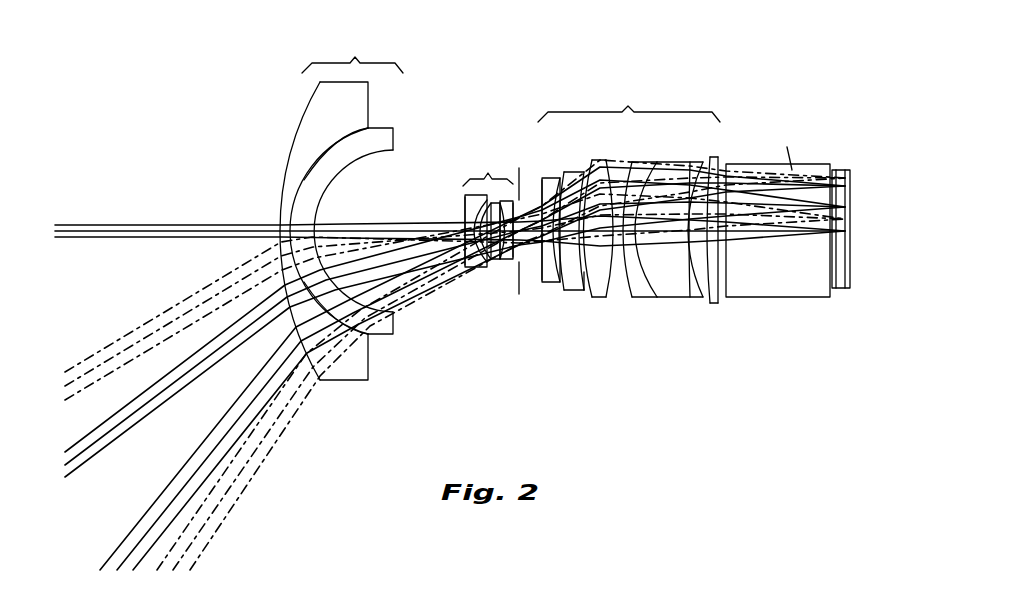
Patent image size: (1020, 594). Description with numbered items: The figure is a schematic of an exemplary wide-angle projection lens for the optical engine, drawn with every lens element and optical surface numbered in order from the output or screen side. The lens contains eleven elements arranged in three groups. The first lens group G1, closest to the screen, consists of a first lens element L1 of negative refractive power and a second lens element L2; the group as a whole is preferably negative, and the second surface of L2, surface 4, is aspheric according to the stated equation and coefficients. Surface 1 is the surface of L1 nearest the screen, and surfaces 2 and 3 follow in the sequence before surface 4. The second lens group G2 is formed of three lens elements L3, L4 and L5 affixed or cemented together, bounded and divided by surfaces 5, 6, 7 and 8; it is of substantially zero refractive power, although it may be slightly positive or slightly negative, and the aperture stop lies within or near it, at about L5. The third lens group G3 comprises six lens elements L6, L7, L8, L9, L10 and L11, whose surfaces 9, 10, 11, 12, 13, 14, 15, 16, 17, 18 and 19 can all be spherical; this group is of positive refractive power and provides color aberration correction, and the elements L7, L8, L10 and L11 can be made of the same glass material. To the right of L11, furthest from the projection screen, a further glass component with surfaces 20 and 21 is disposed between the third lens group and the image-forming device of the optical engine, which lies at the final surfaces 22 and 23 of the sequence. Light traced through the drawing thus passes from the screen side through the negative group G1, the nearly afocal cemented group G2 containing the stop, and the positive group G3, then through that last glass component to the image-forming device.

The first surface of first lens element 1 is at (295, 134).
The second surface of first lens element 2 is at (369, 128).
The first surface of second lens element 3 is at (302, 182).
The second surface of second lens element 4 is at (363, 163).
The optical surface 5 is at (466, 206).
The optical surface 6 is at (464, 217).
The optical surface 7 is at (520, 195).
The optical surface 8 is at (515, 259).
The optical surface 9 is at (545, 179).
The optical surface 10 is at (560, 178).
The optical surface 11 is at (572, 178).
The optical surface 12 is at (585, 176).
The optical surface 13 is at (583, 283).
The optical surface 14 is at (616, 163).
The optical surface 15 is at (625, 287).
The optical surface 16 is at (656, 163).
The optical surface 17 is at (690, 163).
The optical surface 18 is at (693, 288).
The optical surface 19 is at (718, 163).
The prism surface 20 is at (728, 272).
The prism surface 21 is at (836, 289).
The imager-side surface 22 is at (832, 270).
The imager surface 23 is at (832, 104).
The first lens group G1 is at (331, 237).
The second lens group G2 is at (472, 233).
The third lens group G3 is at (653, 233).
The first lens element L1 is at (342, 372).
The second lens element L2 is at (383, 327).
The third lens element L3 is at (475, 268).
The fourth lens element L4 is at (493, 261).
The fifth lens element L5 is at (512, 261).
The sixth lens element L6 is at (546, 283).
The seventh lens element L7 is at (567, 283).
The eighth lens element L8 is at (605, 289).
The ninth lens element L9 is at (645, 300).
The tenth lens element L10 is at (673, 290).
The eleventh lens element L11 is at (712, 290).